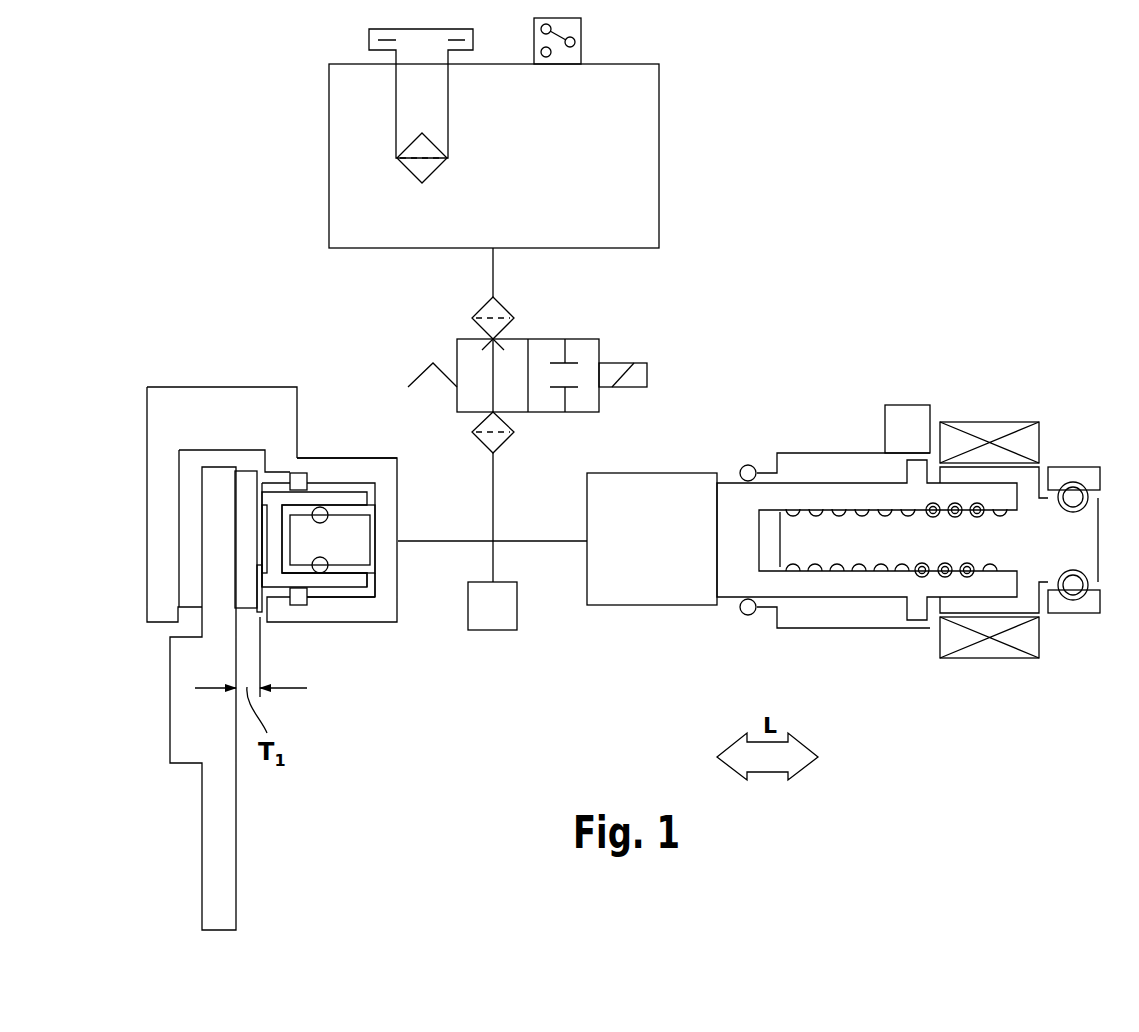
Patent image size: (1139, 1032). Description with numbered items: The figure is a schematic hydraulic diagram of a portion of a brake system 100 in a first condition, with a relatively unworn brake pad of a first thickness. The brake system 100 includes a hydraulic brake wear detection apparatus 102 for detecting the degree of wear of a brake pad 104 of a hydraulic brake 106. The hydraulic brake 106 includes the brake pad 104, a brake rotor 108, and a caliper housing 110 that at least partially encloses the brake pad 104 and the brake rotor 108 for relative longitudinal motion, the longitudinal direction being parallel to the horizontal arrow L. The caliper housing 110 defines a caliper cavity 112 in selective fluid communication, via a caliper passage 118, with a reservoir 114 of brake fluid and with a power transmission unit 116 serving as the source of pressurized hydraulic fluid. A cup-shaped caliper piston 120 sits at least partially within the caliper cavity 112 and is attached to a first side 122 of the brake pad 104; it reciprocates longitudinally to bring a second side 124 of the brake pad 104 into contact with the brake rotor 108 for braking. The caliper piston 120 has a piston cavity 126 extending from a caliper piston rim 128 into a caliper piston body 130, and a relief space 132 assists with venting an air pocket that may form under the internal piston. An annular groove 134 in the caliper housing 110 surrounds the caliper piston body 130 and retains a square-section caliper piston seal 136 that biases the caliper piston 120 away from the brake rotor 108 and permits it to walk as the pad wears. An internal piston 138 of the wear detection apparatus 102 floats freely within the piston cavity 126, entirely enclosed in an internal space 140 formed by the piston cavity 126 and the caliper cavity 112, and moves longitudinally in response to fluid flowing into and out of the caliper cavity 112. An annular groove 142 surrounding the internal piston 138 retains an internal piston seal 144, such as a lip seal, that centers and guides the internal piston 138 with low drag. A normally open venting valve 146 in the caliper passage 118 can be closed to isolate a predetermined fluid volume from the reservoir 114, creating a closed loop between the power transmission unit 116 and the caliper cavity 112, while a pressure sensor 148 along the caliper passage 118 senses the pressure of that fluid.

The brake system 100 is at (890, 165).
The hydraulic brake wear detection apparatus 102 is at (397, 688).
The brake pad 104 is at (249, 487).
The hydraulic brake 106 is at (218, 327).
The brake rotor 108 is at (198, 712).
The caliper housing 110 is at (175, 418).
The caliper cavity 112 is at (372, 583).
The reservoir 114 is at (562, 160).
The power transmission unit 116 is at (833, 417).
The caliper passage 118 is at (463, 540).
The caliper piston 120 is at (333, 490).
The first side 122 is at (282, 478).
The second side 124 is at (230, 527).
The piston cavity 126 is at (345, 572).
The caliper piston rim 128 is at (372, 507).
The caliper piston body 130 is at (275, 578).
The relief space 132 is at (262, 550).
The annular groove 134 is at (303, 473).
The caliper piston seal 136 is at (297, 605).
The internal piston 138 is at (366, 551).
The internal space 140 is at (370, 508).
The annular groove 142 is at (313, 517).
The internal piston seal 144 is at (322, 566).
The normally open venting valve 146 is at (628, 326).
The pressure sensor 148 is at (517, 603).